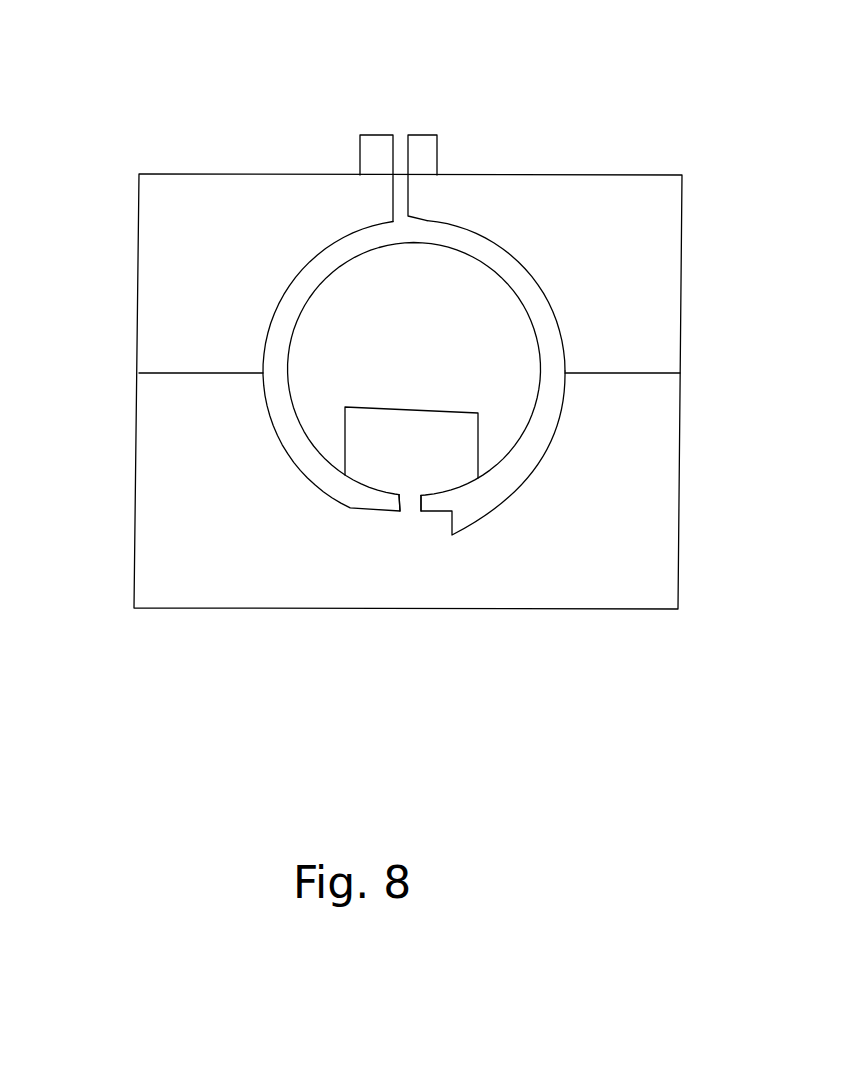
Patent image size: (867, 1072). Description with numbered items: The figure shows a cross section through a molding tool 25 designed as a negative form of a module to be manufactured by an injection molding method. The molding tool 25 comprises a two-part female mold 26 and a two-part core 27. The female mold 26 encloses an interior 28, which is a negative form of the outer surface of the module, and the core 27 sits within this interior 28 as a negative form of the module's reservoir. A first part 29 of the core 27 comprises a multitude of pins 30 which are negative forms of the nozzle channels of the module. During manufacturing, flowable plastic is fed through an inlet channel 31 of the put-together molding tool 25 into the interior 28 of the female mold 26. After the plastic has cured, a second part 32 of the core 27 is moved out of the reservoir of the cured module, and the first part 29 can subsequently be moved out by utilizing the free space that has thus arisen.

The molding tool 25 is at (207, 98).
The female mold 26 is at (162, 293).
The core 27 is at (357, 257).
The interior 28 is at (457, 237).
The first part of the core 29 is at (420, 463).
The pins 30 is at (407, 500).
The inlet channel 31 is at (400, 140).
The second part of the core 32 is at (447, 342).